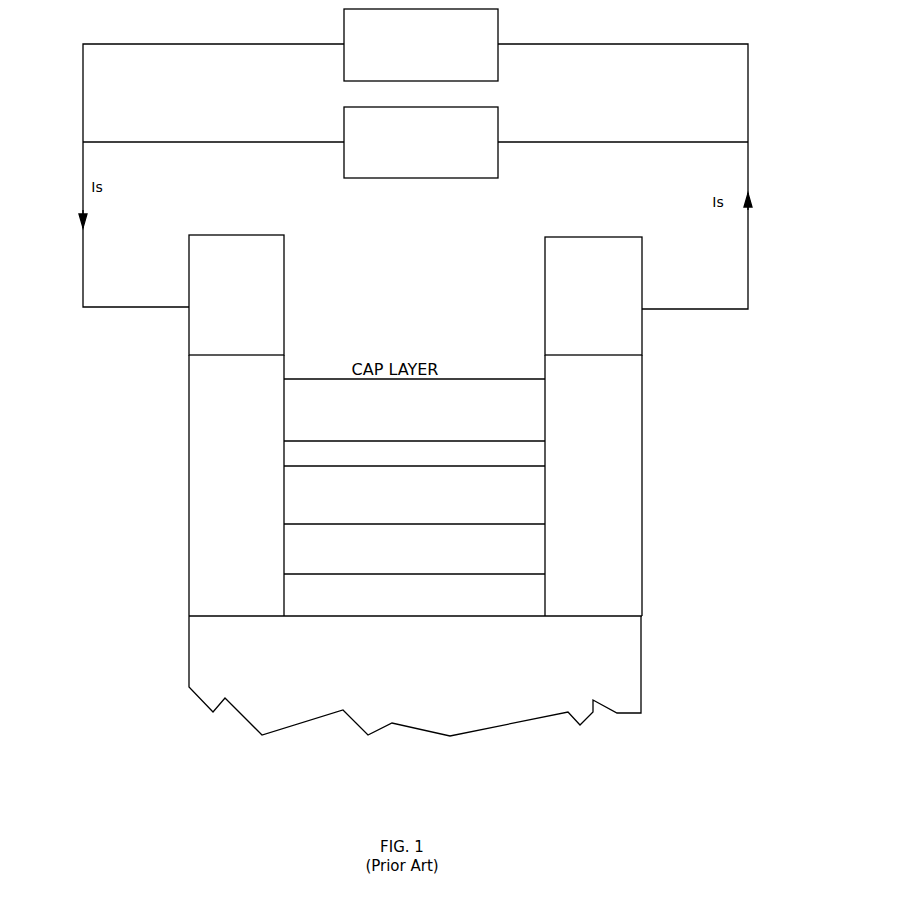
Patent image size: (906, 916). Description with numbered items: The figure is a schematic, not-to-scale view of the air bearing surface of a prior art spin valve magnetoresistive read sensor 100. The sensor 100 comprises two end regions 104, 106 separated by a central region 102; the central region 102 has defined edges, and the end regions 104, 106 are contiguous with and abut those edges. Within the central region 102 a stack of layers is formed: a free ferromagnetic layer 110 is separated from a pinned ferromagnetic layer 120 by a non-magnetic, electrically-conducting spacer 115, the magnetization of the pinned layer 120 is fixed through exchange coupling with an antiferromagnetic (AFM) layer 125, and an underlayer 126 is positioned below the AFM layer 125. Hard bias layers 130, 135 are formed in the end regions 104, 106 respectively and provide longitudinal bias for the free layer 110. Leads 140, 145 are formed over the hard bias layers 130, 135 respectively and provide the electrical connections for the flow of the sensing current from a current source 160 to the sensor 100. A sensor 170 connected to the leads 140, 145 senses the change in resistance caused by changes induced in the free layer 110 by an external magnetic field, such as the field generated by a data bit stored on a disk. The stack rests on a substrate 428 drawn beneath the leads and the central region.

The spin valve sensor 100 is at (272, 785).
The central region 102 is at (545, 223).
The end region 104 is at (286, 222).
The end region 106 is at (642, 225).
The free layer 110 is at (523, 408).
The spacer 115 is at (533, 448).
The pinned layer 120 is at (536, 501).
The antiferromagnetic (AFM) layer 125 is at (533, 544).
The underlayer 126 is at (533, 586).
The hard bias layer 130 is at (237, 605).
The hard bias layer 135 is at (617, 605).
The lead 140 is at (189, 333).
The lead 145 is at (642, 337).
The current source 160 is at (344, 118).
The sensor 170 is at (498, 70).
The substrate 428 is at (617, 698).